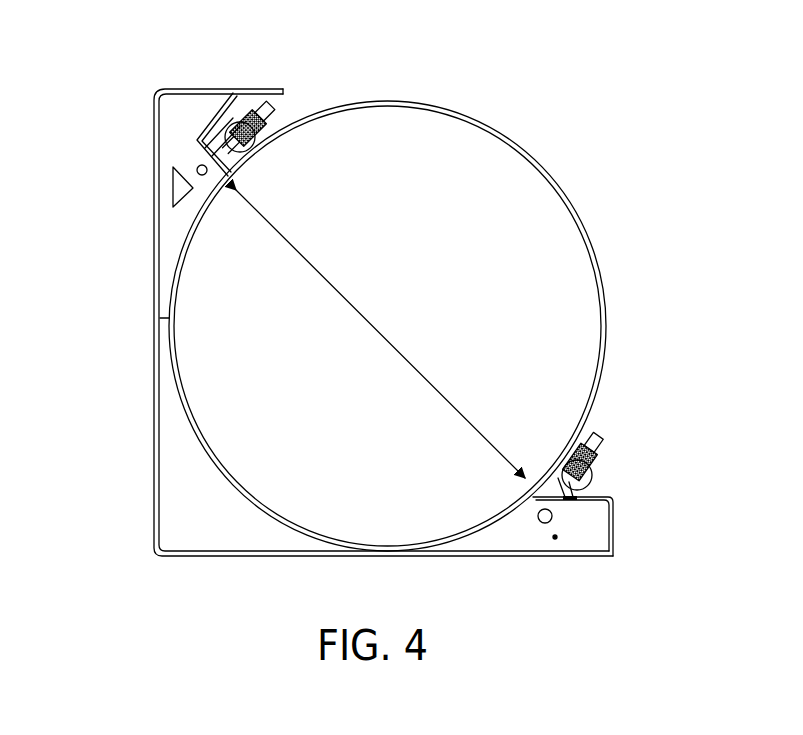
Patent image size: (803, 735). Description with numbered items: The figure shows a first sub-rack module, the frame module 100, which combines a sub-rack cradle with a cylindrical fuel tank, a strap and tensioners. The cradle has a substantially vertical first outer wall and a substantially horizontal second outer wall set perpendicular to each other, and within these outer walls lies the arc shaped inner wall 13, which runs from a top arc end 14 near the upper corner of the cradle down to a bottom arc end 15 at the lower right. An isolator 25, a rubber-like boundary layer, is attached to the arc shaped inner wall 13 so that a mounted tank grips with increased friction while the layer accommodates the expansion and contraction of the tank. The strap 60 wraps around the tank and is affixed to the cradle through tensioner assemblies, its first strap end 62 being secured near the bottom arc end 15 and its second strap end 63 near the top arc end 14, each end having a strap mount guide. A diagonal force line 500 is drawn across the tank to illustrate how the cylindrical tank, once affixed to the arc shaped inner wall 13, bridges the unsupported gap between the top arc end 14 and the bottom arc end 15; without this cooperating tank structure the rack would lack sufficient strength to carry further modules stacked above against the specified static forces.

The arc shaped inner wall 13 is at (157, 360).
The top arc end 14 is at (230, 173).
The bottom arc end 15 is at (530, 508).
The isolator 25 is at (240, 485).
The strap 60 is at (507, 137).
The first strap end 62 is at (597, 470).
The second strap end 63 is at (233, 92).
The frame module 100 is at (128, 261).
The force line 500 is at (378, 330).